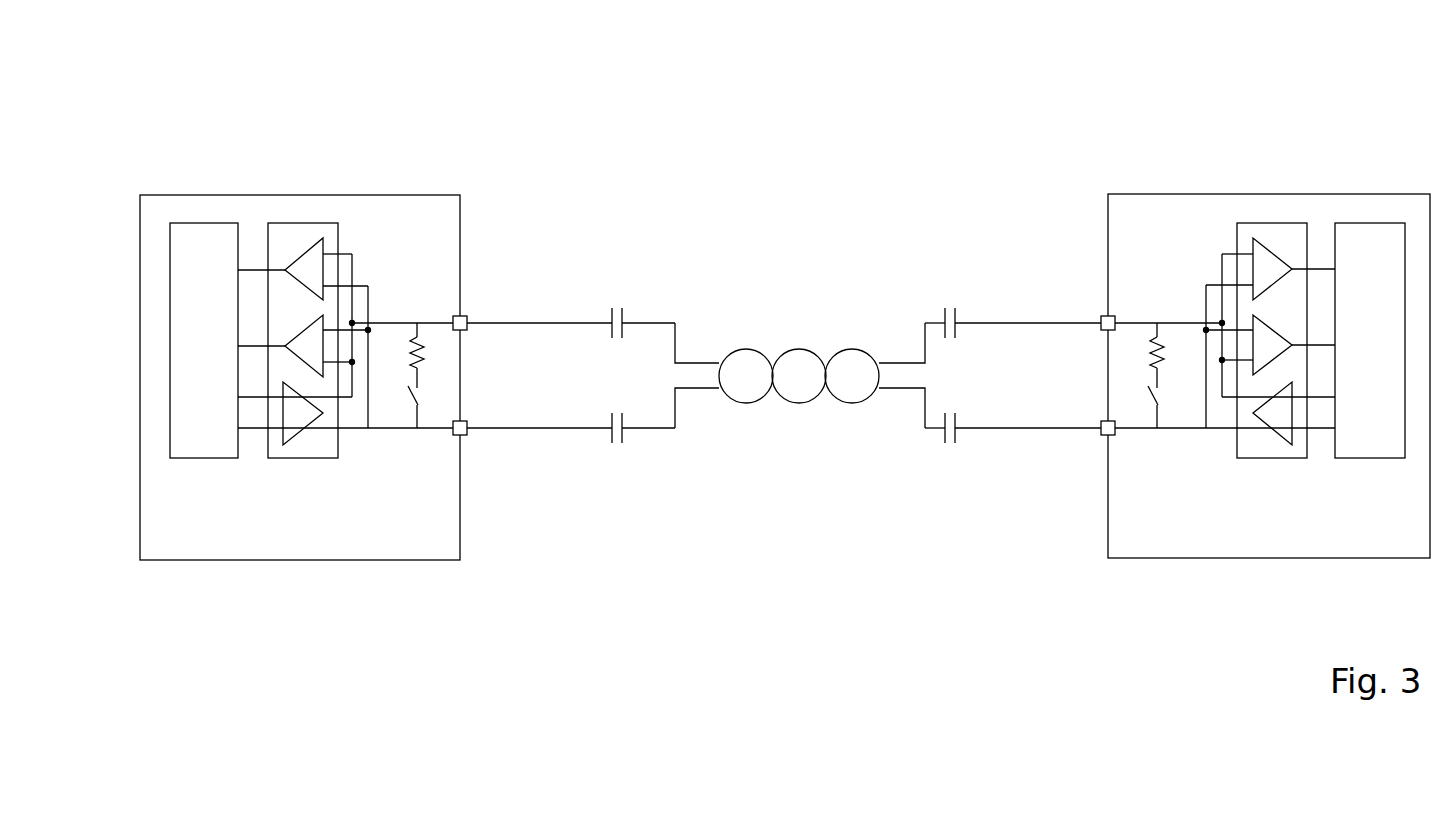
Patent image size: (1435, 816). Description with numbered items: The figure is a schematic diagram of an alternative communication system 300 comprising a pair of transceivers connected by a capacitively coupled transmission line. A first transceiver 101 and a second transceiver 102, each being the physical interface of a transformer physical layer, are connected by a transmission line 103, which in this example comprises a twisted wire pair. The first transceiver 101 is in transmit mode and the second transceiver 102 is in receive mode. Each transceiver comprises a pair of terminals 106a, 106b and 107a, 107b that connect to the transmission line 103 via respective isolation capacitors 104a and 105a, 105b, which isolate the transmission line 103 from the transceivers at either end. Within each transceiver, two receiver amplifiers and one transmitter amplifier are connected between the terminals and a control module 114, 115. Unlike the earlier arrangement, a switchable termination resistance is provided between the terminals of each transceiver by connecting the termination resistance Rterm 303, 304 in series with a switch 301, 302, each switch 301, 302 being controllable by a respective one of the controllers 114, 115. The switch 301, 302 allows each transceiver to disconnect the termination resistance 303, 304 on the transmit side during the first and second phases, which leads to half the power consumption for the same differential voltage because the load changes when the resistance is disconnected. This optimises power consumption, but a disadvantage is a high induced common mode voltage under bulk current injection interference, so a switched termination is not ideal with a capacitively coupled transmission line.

The communication system 300 is at (182, 98).
The first transceiver 101 is at (425, 195).
The second transceiver 102 is at (1179, 194).
The control module 114 is at (186, 365).
The control module 115 is at (1354, 361).
The transmission line 103 is at (848, 350).
The isolation capacitor 104a is at (627, 318).
The isolation capacitor 105a is at (958, 317).
The isolation capacitor 105b is at (957, 437).
The terminal 106a is at (466, 316).
The terminal 106b is at (466, 435).
The terminal 107a is at (1103, 317).
The terminal 107b is at (1103, 435).
The switch 301 is at (420, 402).
The switch 302 is at (1152, 402).
The termination resistance 303 is at (425, 352).
The termination resistance 304 is at (1150, 350).